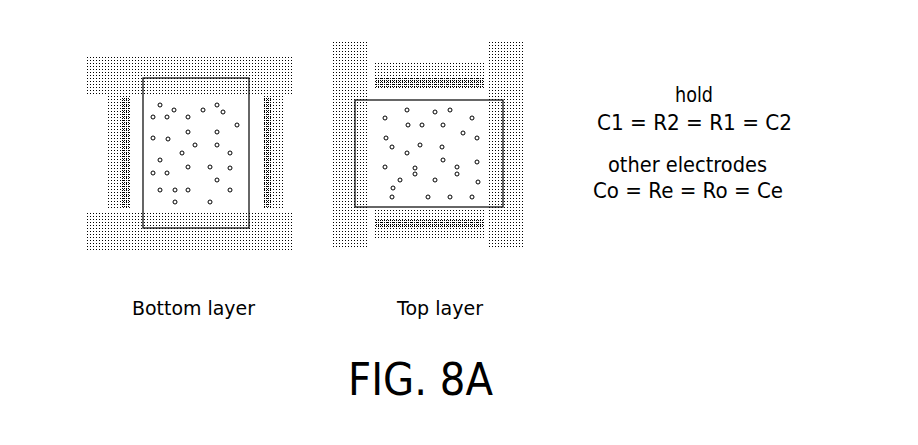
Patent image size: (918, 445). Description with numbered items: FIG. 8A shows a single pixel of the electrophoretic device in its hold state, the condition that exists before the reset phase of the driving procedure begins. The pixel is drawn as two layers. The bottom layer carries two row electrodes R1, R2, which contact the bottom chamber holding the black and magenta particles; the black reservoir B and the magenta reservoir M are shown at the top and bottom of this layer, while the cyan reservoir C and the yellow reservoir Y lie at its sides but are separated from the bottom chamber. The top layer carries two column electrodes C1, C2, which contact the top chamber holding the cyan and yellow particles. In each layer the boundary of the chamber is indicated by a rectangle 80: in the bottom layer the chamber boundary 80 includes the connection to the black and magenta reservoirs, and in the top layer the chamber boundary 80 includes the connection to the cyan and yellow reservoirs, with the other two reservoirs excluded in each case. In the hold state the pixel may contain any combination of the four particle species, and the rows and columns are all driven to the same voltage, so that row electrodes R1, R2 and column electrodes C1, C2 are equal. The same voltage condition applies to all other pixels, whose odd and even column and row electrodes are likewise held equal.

The chamber boundary 80 is at (223, 78).
The row electrode R1 is at (174, 76).
The row electrode R2 is at (174, 231).
The column electrode C1 is at (350, 133).
The column electrode C2 is at (505, 133).
The cyan reservoir C is at (125, 153).
The yellow reservoir Y is at (285, 162).
The magenta reservoir M is at (145, 62).
The black reservoir B is at (223, 233).